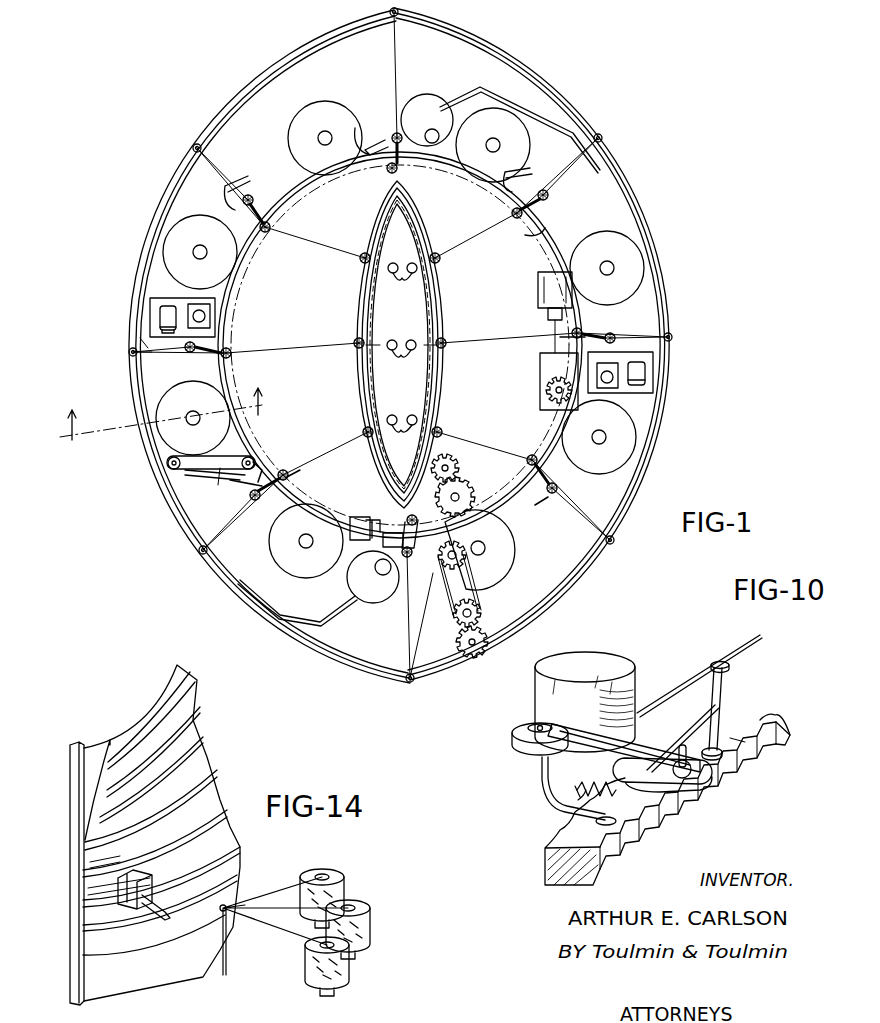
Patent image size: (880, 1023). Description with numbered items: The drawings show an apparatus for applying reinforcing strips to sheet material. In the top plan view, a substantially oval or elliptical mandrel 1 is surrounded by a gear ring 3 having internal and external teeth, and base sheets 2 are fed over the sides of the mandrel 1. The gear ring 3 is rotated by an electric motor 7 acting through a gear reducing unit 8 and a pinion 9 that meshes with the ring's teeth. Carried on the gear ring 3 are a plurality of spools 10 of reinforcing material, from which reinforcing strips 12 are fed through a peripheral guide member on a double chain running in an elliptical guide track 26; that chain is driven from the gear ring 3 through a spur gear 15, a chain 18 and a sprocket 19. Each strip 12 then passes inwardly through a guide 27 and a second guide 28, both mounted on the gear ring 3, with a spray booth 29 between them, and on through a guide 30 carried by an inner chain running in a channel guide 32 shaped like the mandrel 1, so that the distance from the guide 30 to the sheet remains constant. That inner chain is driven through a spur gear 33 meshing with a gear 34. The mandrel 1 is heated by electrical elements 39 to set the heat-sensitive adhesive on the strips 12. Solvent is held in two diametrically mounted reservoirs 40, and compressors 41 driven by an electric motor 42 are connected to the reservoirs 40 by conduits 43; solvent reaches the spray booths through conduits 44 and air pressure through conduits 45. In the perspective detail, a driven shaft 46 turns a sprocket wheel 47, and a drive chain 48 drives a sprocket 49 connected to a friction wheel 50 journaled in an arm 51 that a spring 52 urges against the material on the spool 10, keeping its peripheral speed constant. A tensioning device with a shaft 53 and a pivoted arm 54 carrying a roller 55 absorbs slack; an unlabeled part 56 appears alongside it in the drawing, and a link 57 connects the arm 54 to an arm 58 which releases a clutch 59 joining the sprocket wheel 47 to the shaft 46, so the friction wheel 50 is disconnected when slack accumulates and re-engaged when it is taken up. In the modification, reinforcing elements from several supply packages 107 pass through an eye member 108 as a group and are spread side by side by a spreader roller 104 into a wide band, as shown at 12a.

In FIG. 1, the mandrel 1 is at (440, 303).
In FIG. 14, the mandrel 1 is at (72, 764).
In FIG. 1, the base sheets 2 is at (425, 250).
In FIG. 14, the base sheets 2 is at (90, 808).
In FIG. 1, the gear ring 3 is at (290, 188).
In FIG. 10, the gear ring 3 is at (547, 860).
In FIG. 1, the electric motor 7 is at (538, 292).
In FIG. 1, the gear reducing unit 8 is at (540, 375).
In FIG. 1, the pinion 9 is at (548, 393).
In FIG. 1, the spools 10 is at (333, 114).
In FIG. 10, the spools 10 is at (590, 660).
In FIG. 1, the reinforcing strips 12 is at (392, 42).
In FIG. 10, the reinforcing strips 12 is at (664, 695).
In FIG. 14, the spread reinforcing elements 12a is at (95, 892).
In FIG. 1, the spur gear 15 is at (430, 562).
In FIG. 1, the chain 18 is at (470, 596).
In FIG. 1, the sprocket 19 is at (458, 628).
In FIG. 1, the guide track 26 is at (322, 655).
In FIG. 1, the guide 27 is at (397, 133).
In FIG. 1, the second guide 28 is at (266, 232).
In FIG. 1, the spray booth 29 is at (525, 238).
In FIG. 1, the guide 30 is at (360, 262).
In FIG. 1, the channel guide 32 is at (360, 383).
In FIG. 1, the spur gear 33 is at (468, 497).
In FIG. 1, the gear 34 is at (452, 462).
In FIG. 1, the electrical elements 39 is at (401, 362).
In FIG. 1, the reservoirs 40 is at (437, 105).
In FIG. 1, the compressors 41 is at (195, 308).
In FIG. 1, the electric motor 42 is at (160, 314).
In FIG. 1, the conduits 43 is at (546, 118).
In FIG. 1, the conduits 44 is at (374, 522).
In FIG. 1, the conduits 45 is at (352, 518).
In FIG. 1, the driven shaft 46 is at (265, 475).
In FIG. 10, the driven shaft 46 is at (730, 798).
In FIG. 1, the sprocket wheel 47 is at (262, 462).
In FIG. 10, the sprocket wheel 47 is at (712, 764).
In FIG. 1, the drive chain 48 is at (205, 474).
In FIG. 10, the drive chain 48 is at (650, 750).
In FIG. 1, the sprocket 49 is at (200, 464).
In FIG. 10, the sprocket 49 is at (533, 727).
In FIG. 1, the friction wheel 50 is at (165, 462).
In FIG. 10, the friction wheel 50 is at (510, 736).
In FIG. 10, the arm 51 is at (540, 785).
In FIG. 10, the spring 52 is at (578, 798).
In FIG. 10, the shaft 53 is at (682, 745).
In FIG. 1, the arm 54 is at (130, 350).
In FIG. 10, the arm 54 is at (722, 698).
In FIG. 10, the roller 55 is at (720, 661).
In FIG. 10, the pawl 56 is at (733, 742).
In FIG. 1, the link 57 is at (218, 486).
In FIG. 10, the link 57 is at (700, 715).
In FIG. 10, the arm 58 is at (660, 786).
In FIG. 1, the clutch 59 is at (203, 553).
In FIG. 10, the clutch 59 is at (778, 748).
In FIG. 14, the spreader roller 104 is at (116, 902).
In FIG. 14, the supply packages 107 is at (344, 878).
In FIG. 14, the eye member 108 is at (243, 905).